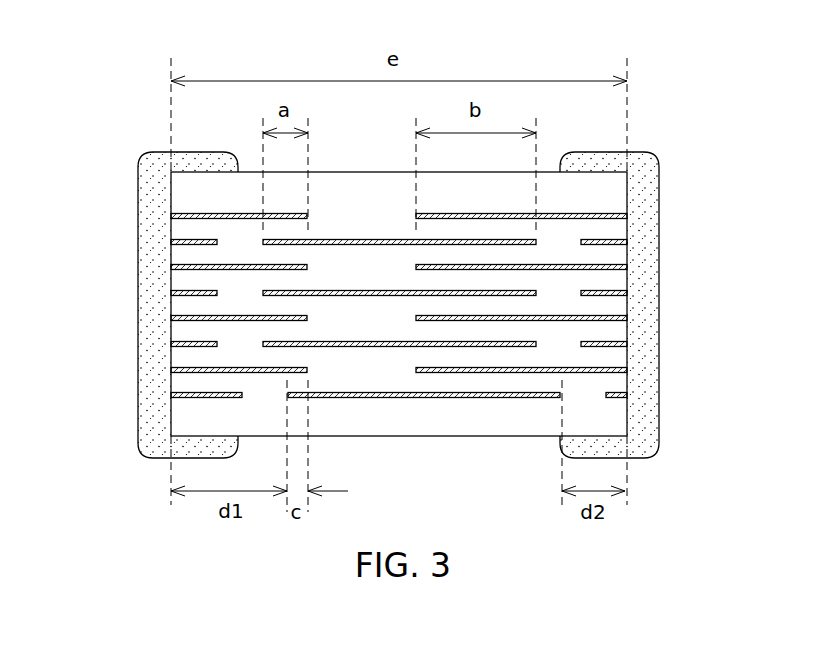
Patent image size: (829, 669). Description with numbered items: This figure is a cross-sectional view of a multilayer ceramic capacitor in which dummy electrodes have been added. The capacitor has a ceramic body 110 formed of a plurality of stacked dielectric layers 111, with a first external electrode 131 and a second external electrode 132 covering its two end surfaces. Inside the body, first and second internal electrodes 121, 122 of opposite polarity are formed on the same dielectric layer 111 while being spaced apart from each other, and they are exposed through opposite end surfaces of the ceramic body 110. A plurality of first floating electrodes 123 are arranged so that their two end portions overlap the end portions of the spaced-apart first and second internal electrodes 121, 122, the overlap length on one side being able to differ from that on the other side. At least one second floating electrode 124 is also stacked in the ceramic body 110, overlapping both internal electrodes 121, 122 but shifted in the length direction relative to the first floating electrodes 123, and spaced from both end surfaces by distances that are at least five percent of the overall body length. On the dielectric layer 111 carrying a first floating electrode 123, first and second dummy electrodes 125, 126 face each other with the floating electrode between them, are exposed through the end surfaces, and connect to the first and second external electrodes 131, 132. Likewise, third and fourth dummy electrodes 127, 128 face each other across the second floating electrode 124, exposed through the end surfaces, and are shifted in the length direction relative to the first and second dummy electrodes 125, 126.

The ceramic body 110 is at (394, 254).
The dielectric layer 111 is at (617, 357).
The first internal electrode 121 is at (240, 213).
The second internal electrode 122 is at (588, 213).
The first floating electrode 123 is at (368, 238).
The second floating electrode 124 is at (406, 398).
The first dummy electrode 125 is at (202, 239).
The second dummy electrode 126 is at (598, 239).
The third dummy electrode 127 is at (227, 396).
The fourth dummy electrode 128 is at (610, 398).
The first external electrode 131 is at (143, 287).
The second external electrode 132 is at (650, 292).